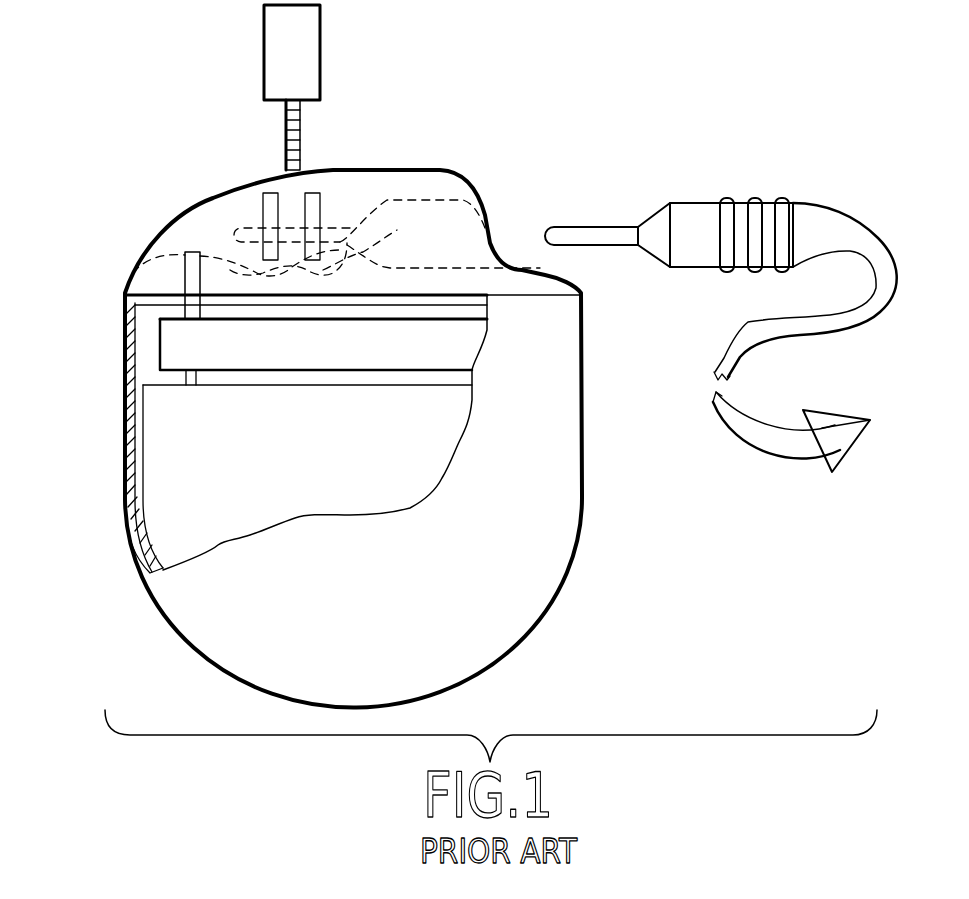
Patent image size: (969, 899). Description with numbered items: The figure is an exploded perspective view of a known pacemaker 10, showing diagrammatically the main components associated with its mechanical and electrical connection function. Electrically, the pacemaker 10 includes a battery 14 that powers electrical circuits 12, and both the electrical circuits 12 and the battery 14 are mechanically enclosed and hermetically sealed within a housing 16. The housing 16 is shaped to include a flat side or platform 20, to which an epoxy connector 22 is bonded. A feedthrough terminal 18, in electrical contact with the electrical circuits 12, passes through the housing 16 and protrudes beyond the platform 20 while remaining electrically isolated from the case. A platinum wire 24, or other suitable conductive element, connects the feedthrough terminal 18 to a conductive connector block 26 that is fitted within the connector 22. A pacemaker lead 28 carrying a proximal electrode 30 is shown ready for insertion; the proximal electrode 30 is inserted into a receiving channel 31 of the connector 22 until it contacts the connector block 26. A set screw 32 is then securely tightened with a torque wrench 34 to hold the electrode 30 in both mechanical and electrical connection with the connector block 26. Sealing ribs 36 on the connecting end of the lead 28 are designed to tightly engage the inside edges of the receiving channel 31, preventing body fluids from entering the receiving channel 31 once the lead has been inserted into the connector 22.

The pacemaker 10 is at (190, 180).
The electrical circuits 12 is at (180, 342).
The battery 14 is at (165, 475).
The housing 16 is at (563, 458).
The feedthrough terminal 18 is at (130, 277).
The platform 20 is at (517, 293).
The epoxy connector 22 is at (175, 247).
The platinum wire 24 is at (387, 235).
The connector block 26 is at (348, 243).
The pacemaker lead 28 is at (718, 362).
The proximal electrode 30 is at (607, 227).
The receiving channel 31 is at (482, 205).
The set screw 32 is at (285, 186).
The torque wrench 34 is at (320, 66).
The sealing ribs 36 is at (778, 197).